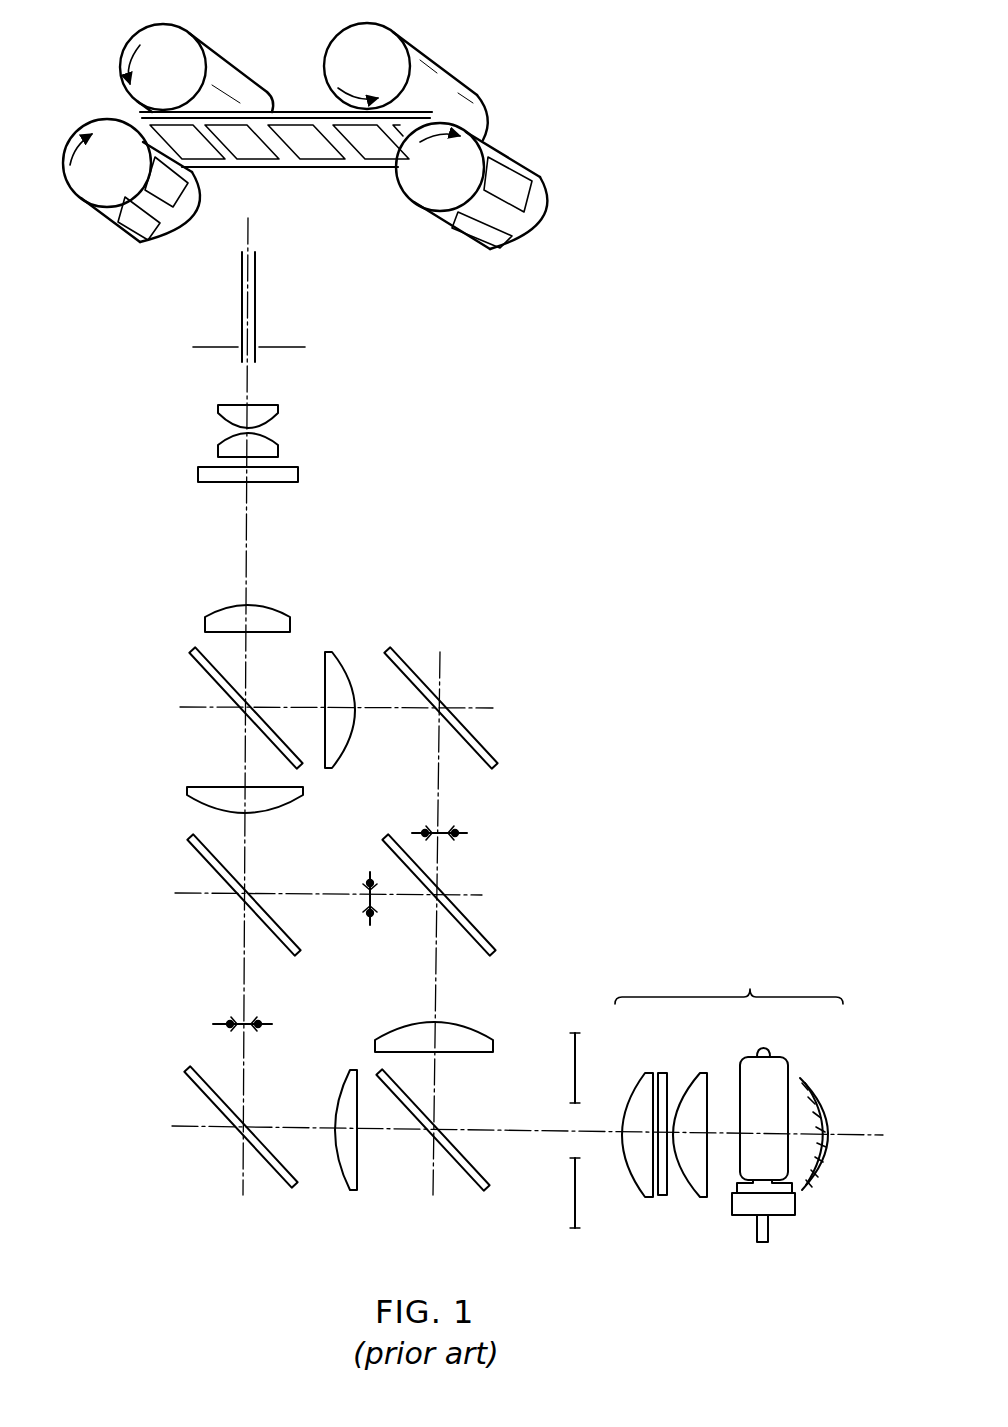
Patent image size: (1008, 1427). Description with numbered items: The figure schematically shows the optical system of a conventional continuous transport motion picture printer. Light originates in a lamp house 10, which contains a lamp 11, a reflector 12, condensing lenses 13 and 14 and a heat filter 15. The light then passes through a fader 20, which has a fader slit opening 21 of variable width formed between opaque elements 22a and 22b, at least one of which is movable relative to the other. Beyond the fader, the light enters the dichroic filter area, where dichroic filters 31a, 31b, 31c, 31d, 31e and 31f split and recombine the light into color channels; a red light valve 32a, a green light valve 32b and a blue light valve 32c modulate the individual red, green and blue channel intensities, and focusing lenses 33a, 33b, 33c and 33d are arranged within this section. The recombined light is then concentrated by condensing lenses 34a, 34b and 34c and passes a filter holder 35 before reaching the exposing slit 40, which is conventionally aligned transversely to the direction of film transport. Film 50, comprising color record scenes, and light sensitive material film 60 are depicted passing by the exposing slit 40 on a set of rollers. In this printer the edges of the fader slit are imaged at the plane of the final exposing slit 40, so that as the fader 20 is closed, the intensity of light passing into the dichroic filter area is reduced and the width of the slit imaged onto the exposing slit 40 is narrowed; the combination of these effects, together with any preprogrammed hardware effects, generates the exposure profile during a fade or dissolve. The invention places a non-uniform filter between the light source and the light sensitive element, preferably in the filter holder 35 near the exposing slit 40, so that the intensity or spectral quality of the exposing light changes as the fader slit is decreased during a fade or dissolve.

The lamp house 10 is at (745, 1123).
The lamp 11 is at (780, 1057).
The reflector 12 is at (815, 1086).
The condensing lens 13 is at (650, 1073).
The condensing lens 14 is at (700, 1073).
The heat filter 15 is at (661, 1198).
The fader 20 is at (578, 1020).
The fader slit opening 21 is at (565, 1141).
The opaque element 22a is at (572, 1057).
The opaque element 22b is at (572, 1215).
The dichroic filter 31a is at (405, 1090).
The dichroic filter 31b is at (200, 1090).
The dichroic filter 31c is at (420, 874).
The dichroic filter 31d is at (207, 863).
The dichroic filter 31e is at (405, 661).
The dichroic filter 31f is at (212, 680).
The red light valve 32a is at (228, 1019).
The green light valve 32b is at (367, 910).
The blue light valve 32c is at (452, 825).
The focusing lens 33a is at (340, 1090).
The focusing lens 33b is at (452, 1026).
The focusing lens 33c is at (297, 797).
The focusing lens 33d is at (343, 662).
The condensing lens 34a is at (218, 413).
The condensing lens 34b is at (218, 448).
The condensing lens 34c is at (205, 621).
The filter holder 35 is at (298, 474).
The exposing slit 40 is at (270, 249).
The film 50 is at (359, 168).
The light sensitive material film 60 is at (433, 82).